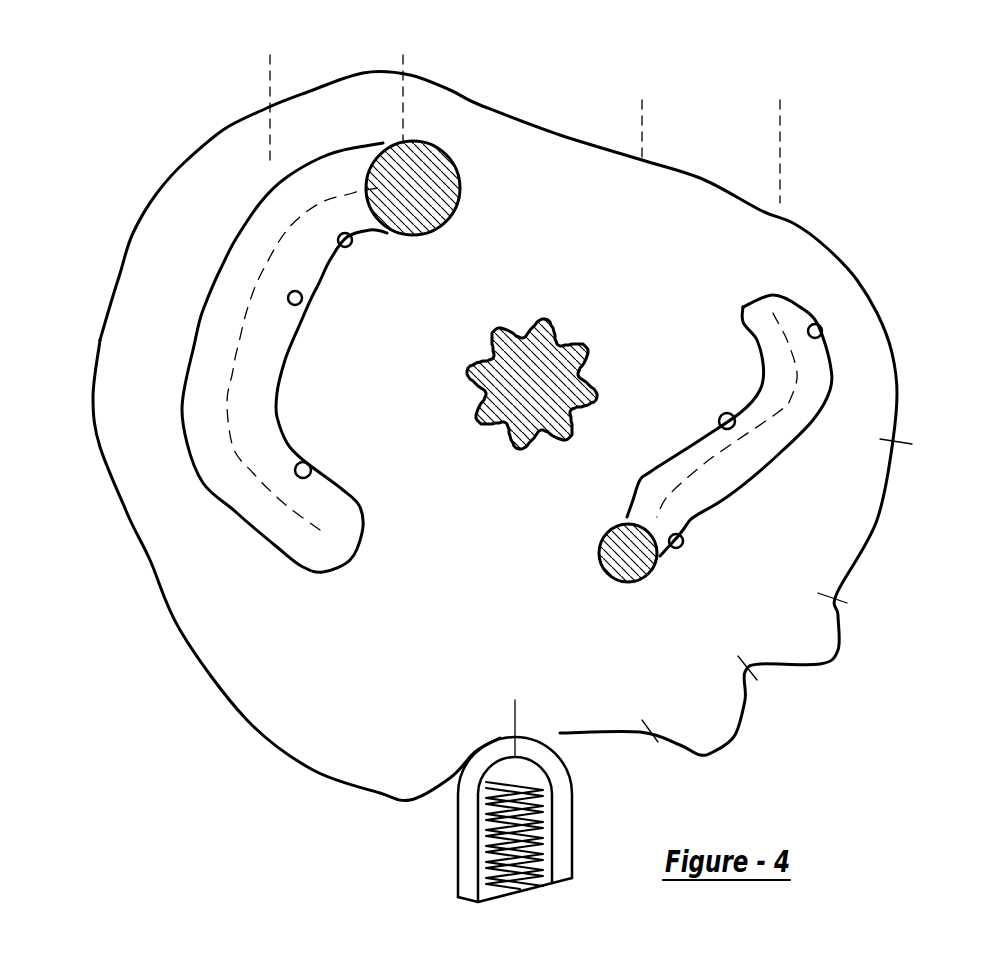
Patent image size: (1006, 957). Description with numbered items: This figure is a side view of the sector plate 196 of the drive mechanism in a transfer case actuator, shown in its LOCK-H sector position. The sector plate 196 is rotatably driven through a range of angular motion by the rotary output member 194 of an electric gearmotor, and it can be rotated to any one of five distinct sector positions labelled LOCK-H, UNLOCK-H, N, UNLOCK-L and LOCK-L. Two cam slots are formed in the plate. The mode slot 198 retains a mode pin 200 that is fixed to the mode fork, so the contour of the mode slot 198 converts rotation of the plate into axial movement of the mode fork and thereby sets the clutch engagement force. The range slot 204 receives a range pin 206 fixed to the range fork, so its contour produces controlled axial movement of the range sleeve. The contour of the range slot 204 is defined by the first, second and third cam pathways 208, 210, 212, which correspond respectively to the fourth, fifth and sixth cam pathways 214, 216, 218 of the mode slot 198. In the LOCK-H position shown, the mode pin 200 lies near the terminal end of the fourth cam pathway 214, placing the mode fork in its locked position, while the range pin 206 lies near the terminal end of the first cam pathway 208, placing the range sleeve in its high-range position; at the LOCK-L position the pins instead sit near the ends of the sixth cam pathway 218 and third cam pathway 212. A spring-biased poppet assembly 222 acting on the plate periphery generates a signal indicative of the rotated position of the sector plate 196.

The rotary output member 194 is at (503, 447).
The sector plate 196 is at (895, 367).
The mode slot 198 is at (203, 306).
The mode pin 200 is at (452, 165).
The range slot 204 is at (752, 478).
The range pin 206 is at (605, 563).
The first cam pathway 208 is at (684, 548).
The second cam pathway 210 is at (722, 413).
The third cam pathway 212 is at (820, 335).
The fourth cam pathway 214 is at (352, 245).
The fifth cam pathway 216 is at (302, 303).
The sixth cam pathway 218 is at (310, 465).
The spring-biased poppet assembly 222 is at (565, 835).